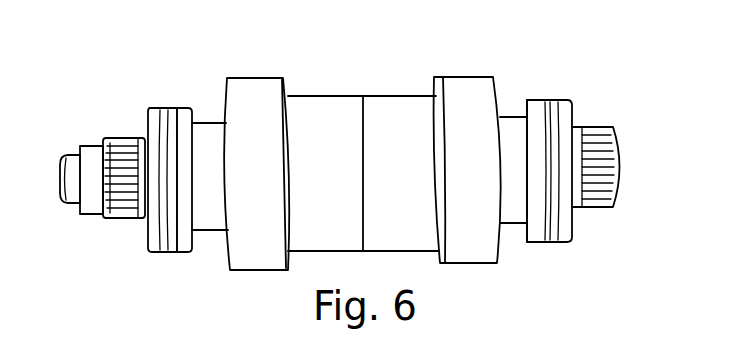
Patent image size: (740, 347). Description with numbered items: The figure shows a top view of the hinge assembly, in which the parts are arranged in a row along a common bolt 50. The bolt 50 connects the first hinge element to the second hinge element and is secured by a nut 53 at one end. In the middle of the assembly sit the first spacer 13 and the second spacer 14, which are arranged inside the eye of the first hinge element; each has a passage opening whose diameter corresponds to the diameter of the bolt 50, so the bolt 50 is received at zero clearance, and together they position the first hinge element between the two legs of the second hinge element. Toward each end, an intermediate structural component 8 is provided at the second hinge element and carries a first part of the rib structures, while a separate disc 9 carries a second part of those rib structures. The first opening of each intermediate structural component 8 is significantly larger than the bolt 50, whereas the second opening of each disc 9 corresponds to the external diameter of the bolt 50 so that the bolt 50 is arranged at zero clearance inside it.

The bolt 50 is at (77, 160).
The nut 53 is at (125, 210).
The disc 9 is at (160, 107).
The intermediate structural component 8 is at (170, 122).
The second spacer 14 is at (248, 97).
The first spacer 13 is at (465, 97).